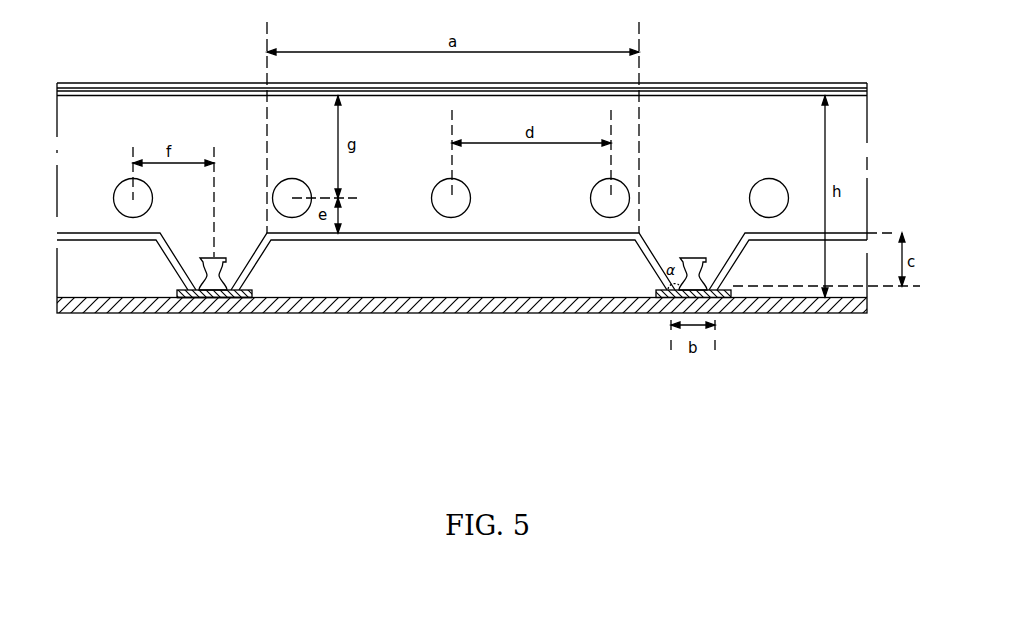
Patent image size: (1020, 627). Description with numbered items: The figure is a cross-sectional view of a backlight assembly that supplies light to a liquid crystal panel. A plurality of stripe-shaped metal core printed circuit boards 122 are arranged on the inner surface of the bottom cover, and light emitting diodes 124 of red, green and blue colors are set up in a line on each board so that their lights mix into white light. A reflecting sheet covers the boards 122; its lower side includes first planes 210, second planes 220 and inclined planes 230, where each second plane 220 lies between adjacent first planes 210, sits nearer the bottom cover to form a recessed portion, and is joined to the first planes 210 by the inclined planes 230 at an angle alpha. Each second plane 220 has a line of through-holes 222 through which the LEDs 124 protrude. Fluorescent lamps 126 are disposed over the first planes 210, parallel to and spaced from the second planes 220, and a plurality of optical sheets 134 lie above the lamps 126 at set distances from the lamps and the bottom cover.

The optical sheets 134 is at (873, 83).
The fluorescent lamps 126 is at (292, 218).
The inclined planes 230 is at (173, 263).
The second planes 220 is at (237, 298).
The through-holes 222 is at (178, 297).
The metal core printed circuit boards 122 is at (253, 298).
The light emitting diodes 124 is at (213, 283).
The first planes 210 is at (560, 235).